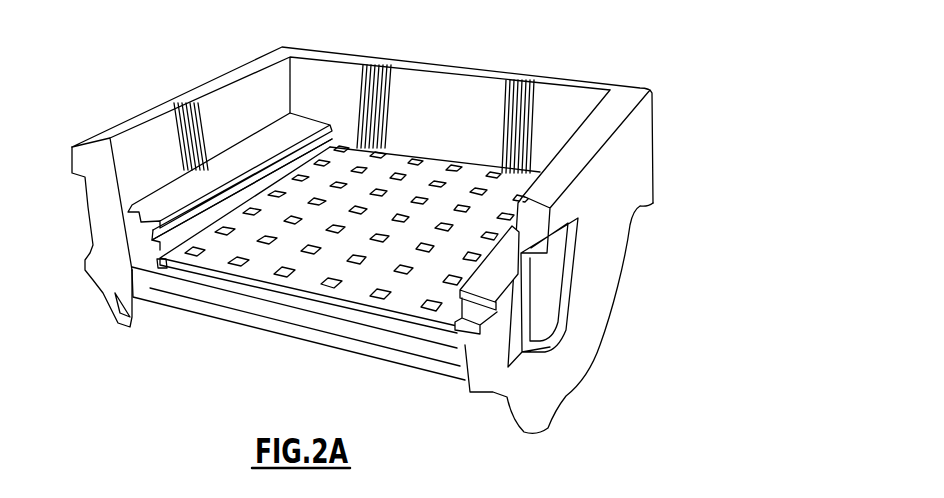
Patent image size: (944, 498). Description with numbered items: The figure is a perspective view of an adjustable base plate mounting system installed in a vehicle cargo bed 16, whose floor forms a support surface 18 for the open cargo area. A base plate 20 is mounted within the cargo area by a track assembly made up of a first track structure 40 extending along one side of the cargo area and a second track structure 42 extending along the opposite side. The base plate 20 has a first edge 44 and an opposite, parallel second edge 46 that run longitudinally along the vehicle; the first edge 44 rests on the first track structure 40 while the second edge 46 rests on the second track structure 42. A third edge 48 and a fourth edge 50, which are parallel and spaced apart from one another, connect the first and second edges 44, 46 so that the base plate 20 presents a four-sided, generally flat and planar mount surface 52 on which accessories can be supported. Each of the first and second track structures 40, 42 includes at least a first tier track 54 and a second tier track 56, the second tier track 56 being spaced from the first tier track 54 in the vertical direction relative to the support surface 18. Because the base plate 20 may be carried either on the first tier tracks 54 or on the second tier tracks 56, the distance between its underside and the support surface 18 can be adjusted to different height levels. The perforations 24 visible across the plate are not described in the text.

The cargo bed 16 is at (355, 88).
The support surface 18 is at (403, 330).
The base plate 20 is at (453, 194).
The apertures 24 is at (377, 301).
The first track structure 40 is at (290, 127).
The second track structure 42 is at (500, 278).
The first edge 44 is at (163, 267).
The second edge 46 is at (448, 330).
The third edge 48 is at (397, 157).
The fourth edge 50 is at (220, 275).
The mount surface 52 is at (417, 288).
The first tier track 54 is at (128, 318).
The second tier track 56 is at (153, 233).